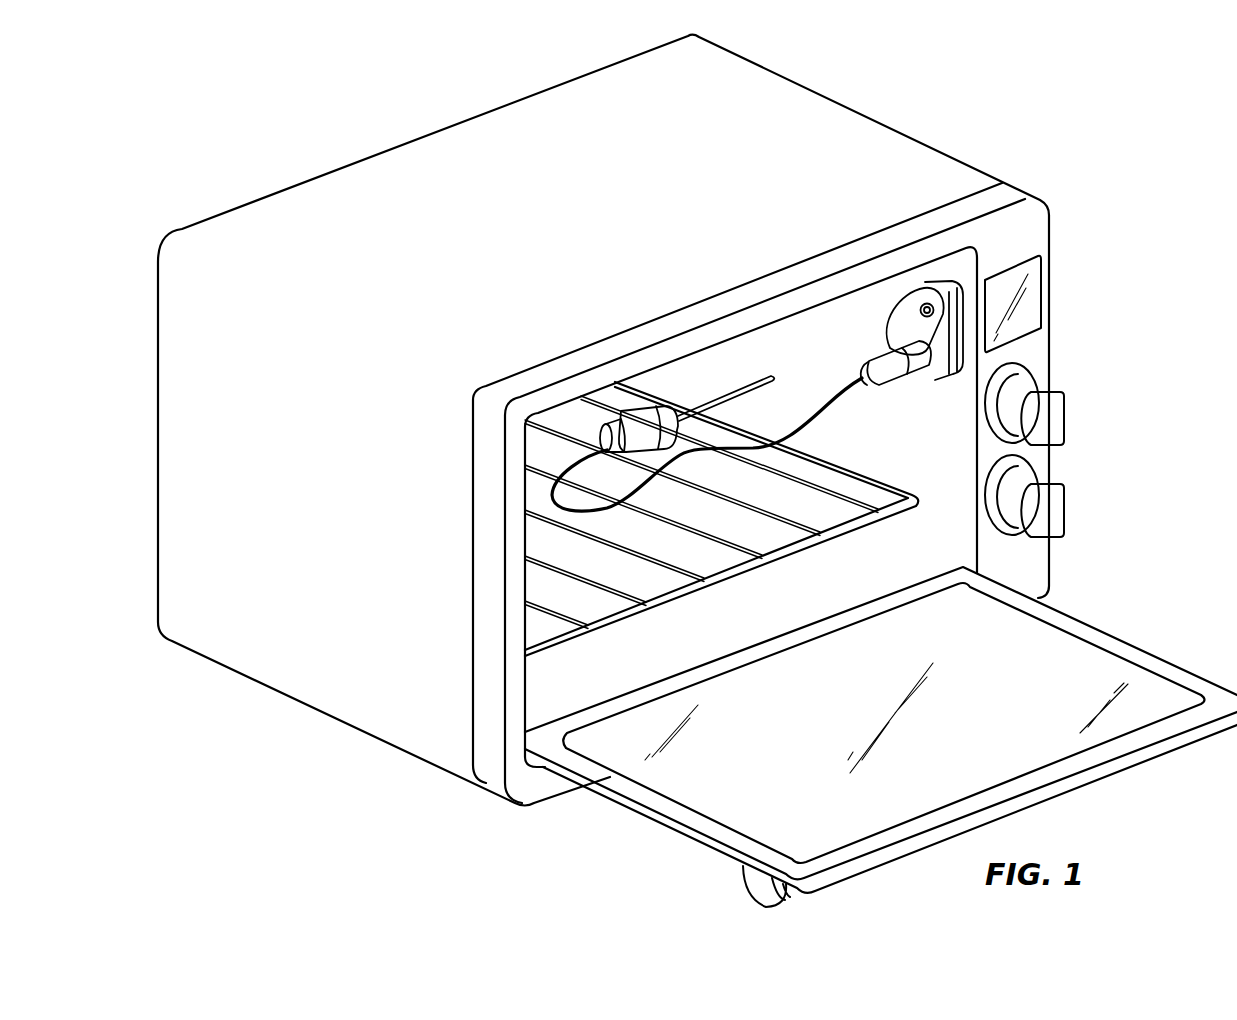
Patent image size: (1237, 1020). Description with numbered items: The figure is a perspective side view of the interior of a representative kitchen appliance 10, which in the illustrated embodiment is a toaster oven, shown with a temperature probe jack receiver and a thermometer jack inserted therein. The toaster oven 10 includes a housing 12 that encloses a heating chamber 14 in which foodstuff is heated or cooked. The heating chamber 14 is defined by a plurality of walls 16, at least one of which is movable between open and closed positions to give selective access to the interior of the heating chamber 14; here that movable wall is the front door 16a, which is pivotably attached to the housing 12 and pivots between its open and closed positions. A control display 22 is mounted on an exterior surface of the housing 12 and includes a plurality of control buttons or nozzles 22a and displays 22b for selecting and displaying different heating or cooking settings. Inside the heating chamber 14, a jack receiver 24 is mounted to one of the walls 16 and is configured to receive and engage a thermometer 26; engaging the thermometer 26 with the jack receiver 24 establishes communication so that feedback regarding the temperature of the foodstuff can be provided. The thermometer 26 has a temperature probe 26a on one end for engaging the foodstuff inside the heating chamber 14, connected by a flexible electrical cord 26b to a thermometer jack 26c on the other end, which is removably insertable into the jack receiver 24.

The kitchen appliance 10 is at (1003, 150).
The housing 12 is at (892, 143).
The heating chamber 14 is at (686, 642).
The walls 16 is at (932, 537).
The front door 16a is at (1080, 630).
The control display 22 is at (1044, 354).
The control buttons or nozzles 22a is at (1062, 416).
The displays 22b is at (1035, 298).
The jack receiver 24 is at (891, 334).
The thermometer 26 is at (856, 381).
The temperature probe 26a is at (747, 384).
The flexible electrical cord 26b is at (830, 410).
The thermometer jack 26c is at (910, 368).